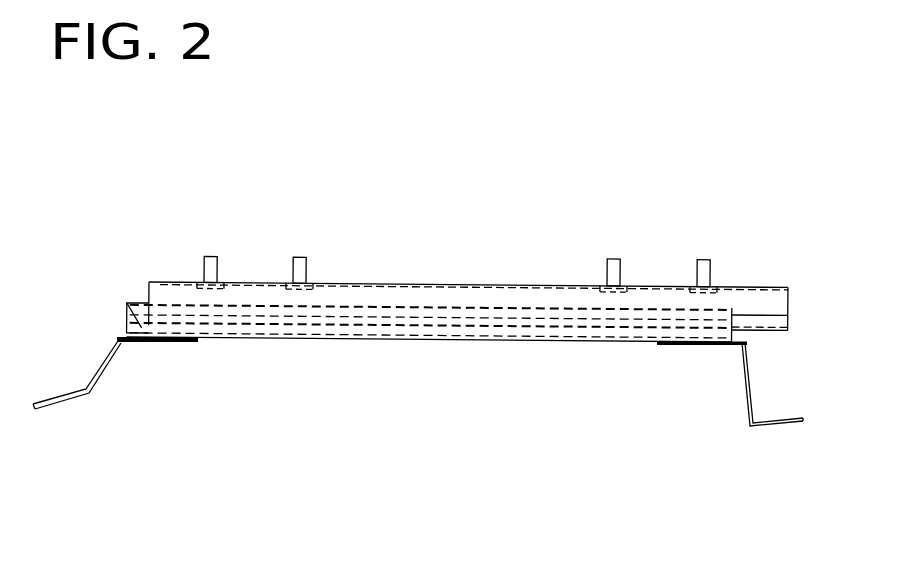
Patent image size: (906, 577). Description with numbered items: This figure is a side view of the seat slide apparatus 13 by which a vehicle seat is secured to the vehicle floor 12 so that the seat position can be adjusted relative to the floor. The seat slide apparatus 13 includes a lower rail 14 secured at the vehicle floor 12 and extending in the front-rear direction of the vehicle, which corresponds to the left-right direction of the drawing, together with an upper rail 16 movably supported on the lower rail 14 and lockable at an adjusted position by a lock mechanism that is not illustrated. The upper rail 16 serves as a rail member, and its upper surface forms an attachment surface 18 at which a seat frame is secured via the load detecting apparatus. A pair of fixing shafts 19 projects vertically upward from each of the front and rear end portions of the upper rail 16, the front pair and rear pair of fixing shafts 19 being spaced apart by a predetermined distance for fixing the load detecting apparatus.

The vehicle floor 12 is at (421, 480).
The seat slide apparatus 13 is at (99, 212).
The lower rail 14 is at (127, 303).
The upper rail 16 is at (743, 300).
The attachment surface 18 is at (417, 282).
The fixing shaft 19 is at (213, 256).